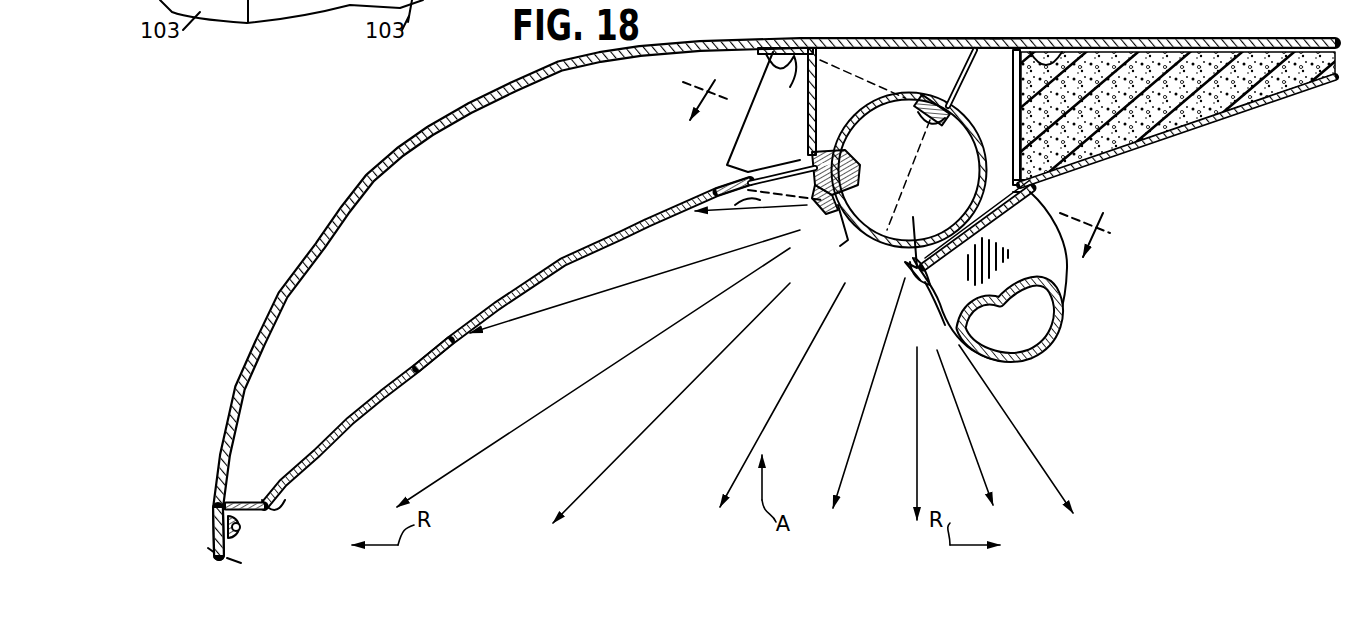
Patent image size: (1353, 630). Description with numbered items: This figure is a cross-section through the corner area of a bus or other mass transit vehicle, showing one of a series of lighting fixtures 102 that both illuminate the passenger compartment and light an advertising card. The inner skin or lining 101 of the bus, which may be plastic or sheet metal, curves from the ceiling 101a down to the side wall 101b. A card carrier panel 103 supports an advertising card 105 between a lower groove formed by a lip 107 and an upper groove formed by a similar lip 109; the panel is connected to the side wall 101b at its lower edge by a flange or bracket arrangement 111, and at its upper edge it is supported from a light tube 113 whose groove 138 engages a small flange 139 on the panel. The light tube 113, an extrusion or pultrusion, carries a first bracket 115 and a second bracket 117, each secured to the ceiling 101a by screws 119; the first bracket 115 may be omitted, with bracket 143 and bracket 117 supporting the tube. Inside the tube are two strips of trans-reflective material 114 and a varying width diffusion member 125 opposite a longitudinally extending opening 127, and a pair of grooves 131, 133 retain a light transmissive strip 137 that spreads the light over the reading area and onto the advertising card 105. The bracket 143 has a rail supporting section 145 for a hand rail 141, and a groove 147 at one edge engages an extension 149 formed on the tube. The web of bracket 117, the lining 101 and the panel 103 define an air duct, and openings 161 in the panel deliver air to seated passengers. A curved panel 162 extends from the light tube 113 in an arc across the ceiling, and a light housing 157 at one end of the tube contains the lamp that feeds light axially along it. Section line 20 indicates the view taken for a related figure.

The inner skin or lining 101 is at (370, 168).
The ceiling 101a is at (983, 42).
The side wall 101b is at (216, 546).
The lighting fixture 102 is at (895, 68).
The panel 103 is at (487, 303).
The advertising card 105 is at (447, 352).
The lip 107 is at (287, 505).
The lip 109 is at (743, 184).
The flange or bracket arrangement 111 is at (246, 532).
The light tube 113 is at (958, 112).
The trans-reflective material strips 114 is at (975, 150).
The first bracket 115 is at (1000, 45).
The second bracket 117 is at (814, 47).
The screws 119 is at (796, 78).
The varying width diffusion member 125 is at (925, 112).
The longitudinally extending opening 127 is at (898, 205).
The groove 131 is at (822, 210).
The groove 133 is at (918, 256).
The light transmissive strip 137 is at (845, 245).
The groove 138 is at (832, 150).
The flange 139 is at (805, 170).
The hand rail 141 is at (1060, 303).
The bracket 143 is at (1013, 84).
The rail supporting section 145 is at (1045, 255).
The groove 147 is at (905, 287).
The extension 149 is at (943, 314).
The light housing 157 is at (735, 138).
The openings 161 is at (760, 200).
The curved panel 162 is at (1172, 112).
The section line 20 is at (903, 156).